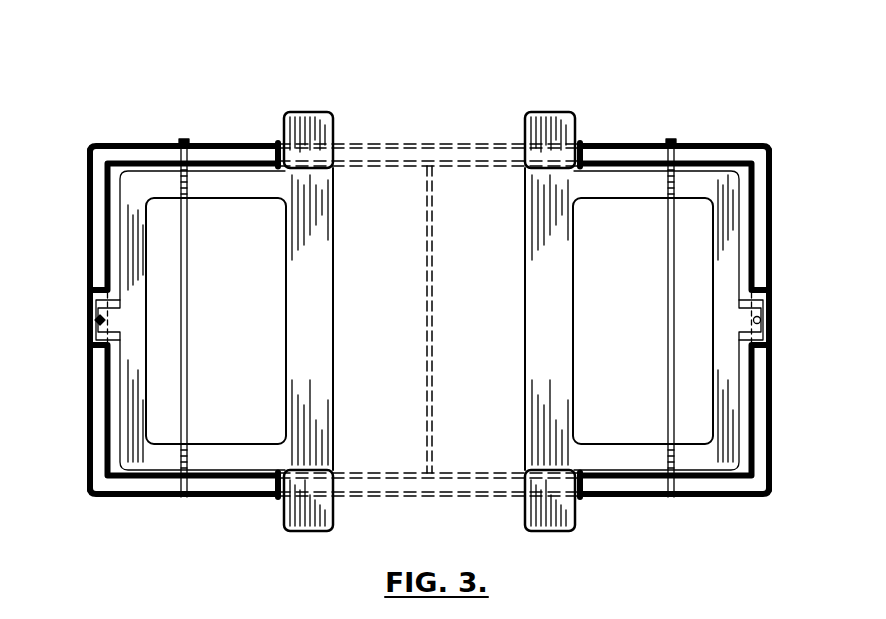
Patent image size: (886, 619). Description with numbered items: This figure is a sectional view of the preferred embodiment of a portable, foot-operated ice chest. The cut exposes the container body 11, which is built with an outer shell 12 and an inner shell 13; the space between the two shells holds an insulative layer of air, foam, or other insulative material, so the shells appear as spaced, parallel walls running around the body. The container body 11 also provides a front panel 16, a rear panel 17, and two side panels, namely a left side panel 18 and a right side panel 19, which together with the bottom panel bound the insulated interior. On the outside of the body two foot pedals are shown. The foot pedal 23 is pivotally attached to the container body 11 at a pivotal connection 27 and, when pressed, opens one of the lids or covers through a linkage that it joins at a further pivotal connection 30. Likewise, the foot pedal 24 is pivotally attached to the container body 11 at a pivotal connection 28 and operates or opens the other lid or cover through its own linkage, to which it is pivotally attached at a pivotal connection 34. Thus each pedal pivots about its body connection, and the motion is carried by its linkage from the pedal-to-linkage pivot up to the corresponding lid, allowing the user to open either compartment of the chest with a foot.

The container body 11 is at (416, 143).
The outer shell 12 is at (427, 325).
The inner shell 13 is at (110, 384).
The front panel 16 is at (143, 500).
The rear panel 17 is at (232, 143).
The left side panel 18 is at (87, 233).
The right side panel 19 is at (772, 392).
The foot pedal 23 is at (302, 112).
The foot pedal 24 is at (550, 112).
The pivotal connection 27 is at (188, 333).
The pivotal connection 28 is at (667, 300).
The pivotal connection 30 is at (97, 338).
The pivotal connection 34 is at (770, 318).